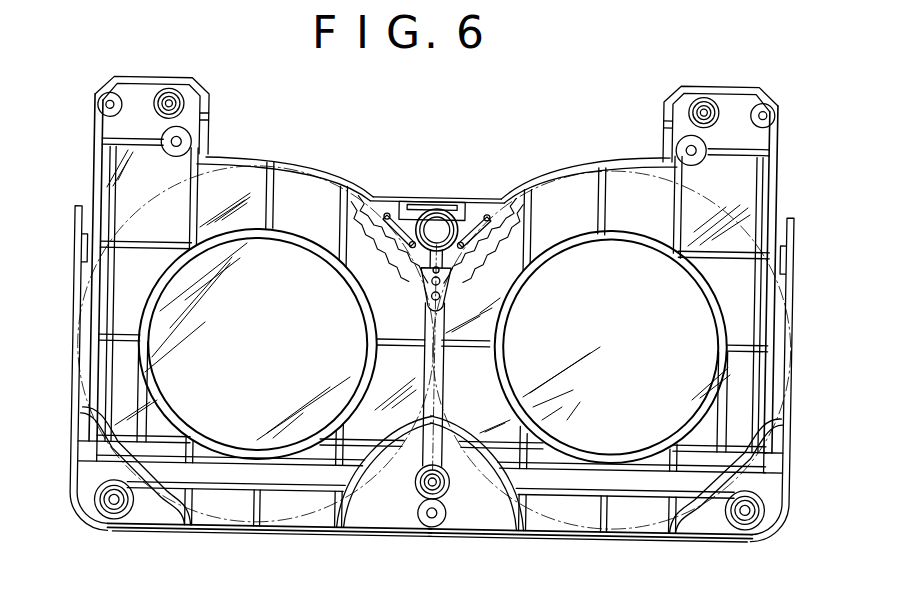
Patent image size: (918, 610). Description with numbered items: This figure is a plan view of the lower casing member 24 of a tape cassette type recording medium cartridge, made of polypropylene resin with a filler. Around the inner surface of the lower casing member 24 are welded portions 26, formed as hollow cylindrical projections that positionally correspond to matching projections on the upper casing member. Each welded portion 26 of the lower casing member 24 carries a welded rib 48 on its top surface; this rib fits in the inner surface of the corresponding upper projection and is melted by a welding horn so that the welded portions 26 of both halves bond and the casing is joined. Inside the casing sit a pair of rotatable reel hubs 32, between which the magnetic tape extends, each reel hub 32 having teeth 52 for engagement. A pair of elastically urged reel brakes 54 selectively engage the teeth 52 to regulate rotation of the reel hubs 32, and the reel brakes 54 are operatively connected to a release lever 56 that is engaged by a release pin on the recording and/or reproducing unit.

The lower casing member 24 is at (92, 137).
The welded portions 26 is at (152, 101).
The reel hubs 32 is at (335, 172).
The welded rib 48 is at (182, 96).
The teeth 52 is at (358, 197).
The reel brakes 54 is at (397, 238).
The release lever 56 is at (433, 226).